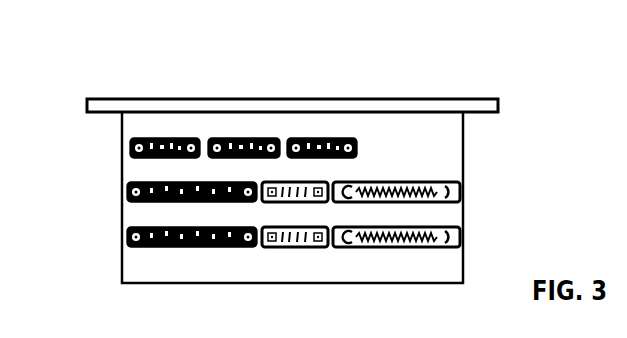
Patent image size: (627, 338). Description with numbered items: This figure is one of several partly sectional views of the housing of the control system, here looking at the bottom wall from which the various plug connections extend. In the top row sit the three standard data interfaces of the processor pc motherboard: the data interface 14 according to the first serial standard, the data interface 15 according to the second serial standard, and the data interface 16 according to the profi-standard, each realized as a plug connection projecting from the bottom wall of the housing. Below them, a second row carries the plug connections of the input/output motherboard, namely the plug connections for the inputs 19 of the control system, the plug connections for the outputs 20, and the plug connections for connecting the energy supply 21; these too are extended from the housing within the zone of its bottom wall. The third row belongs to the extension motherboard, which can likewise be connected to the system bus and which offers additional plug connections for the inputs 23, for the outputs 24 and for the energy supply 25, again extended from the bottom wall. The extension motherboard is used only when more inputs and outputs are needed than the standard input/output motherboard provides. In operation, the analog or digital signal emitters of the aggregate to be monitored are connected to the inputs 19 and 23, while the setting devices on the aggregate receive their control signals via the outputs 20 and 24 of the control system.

The data interface 14 is at (250, 146).
The data interface 15 is at (162, 146).
The data interface 16 is at (335, 144).
The inputs 19 is at (396, 257).
The outputs 20 is at (192, 257).
The energy supply 21 is at (298, 257).
The inputs 23 is at (396, 279).
The outputs 24 is at (192, 279).
The energy supply 25 is at (294, 279).